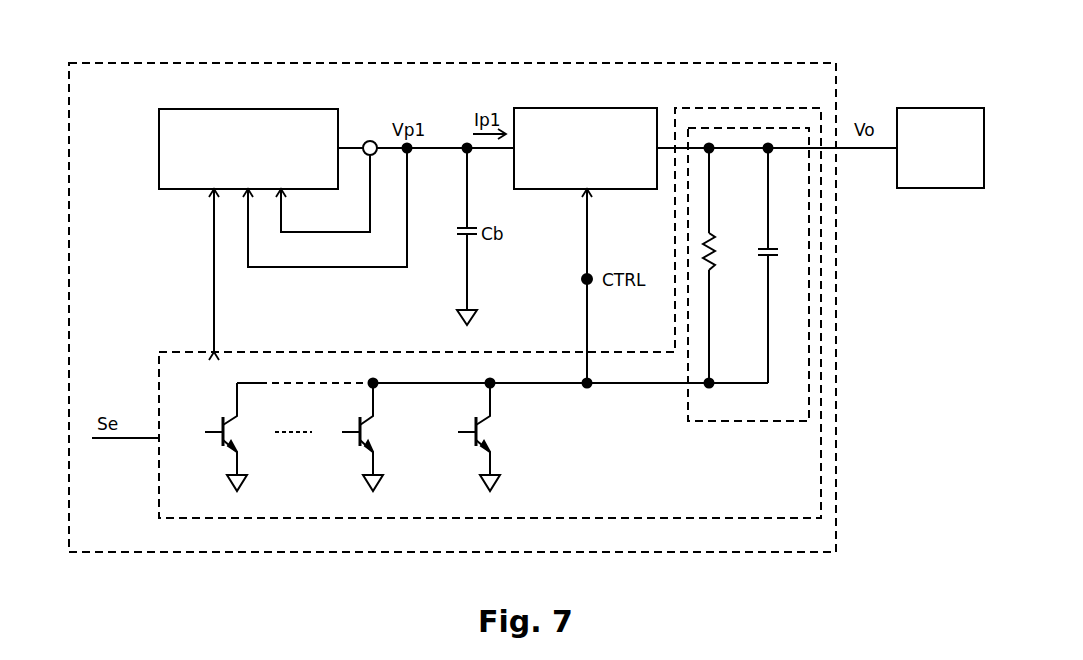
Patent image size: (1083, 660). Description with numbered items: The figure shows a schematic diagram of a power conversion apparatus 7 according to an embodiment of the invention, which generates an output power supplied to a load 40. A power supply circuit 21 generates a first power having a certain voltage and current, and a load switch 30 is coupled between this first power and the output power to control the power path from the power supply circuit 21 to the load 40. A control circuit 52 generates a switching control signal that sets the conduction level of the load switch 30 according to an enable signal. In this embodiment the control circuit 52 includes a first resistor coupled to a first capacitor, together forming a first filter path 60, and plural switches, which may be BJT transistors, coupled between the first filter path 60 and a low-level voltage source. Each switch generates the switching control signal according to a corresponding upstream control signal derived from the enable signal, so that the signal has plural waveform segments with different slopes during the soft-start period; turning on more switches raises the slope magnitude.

The power conversion apparatus 7 is at (812, 63).
The power supply circuit 21 is at (312, 185).
The load switch 30 is at (629, 185).
The load 40 is at (957, 184).
The control circuit 52 is at (792, 509).
The first filter path 60 is at (782, 416).